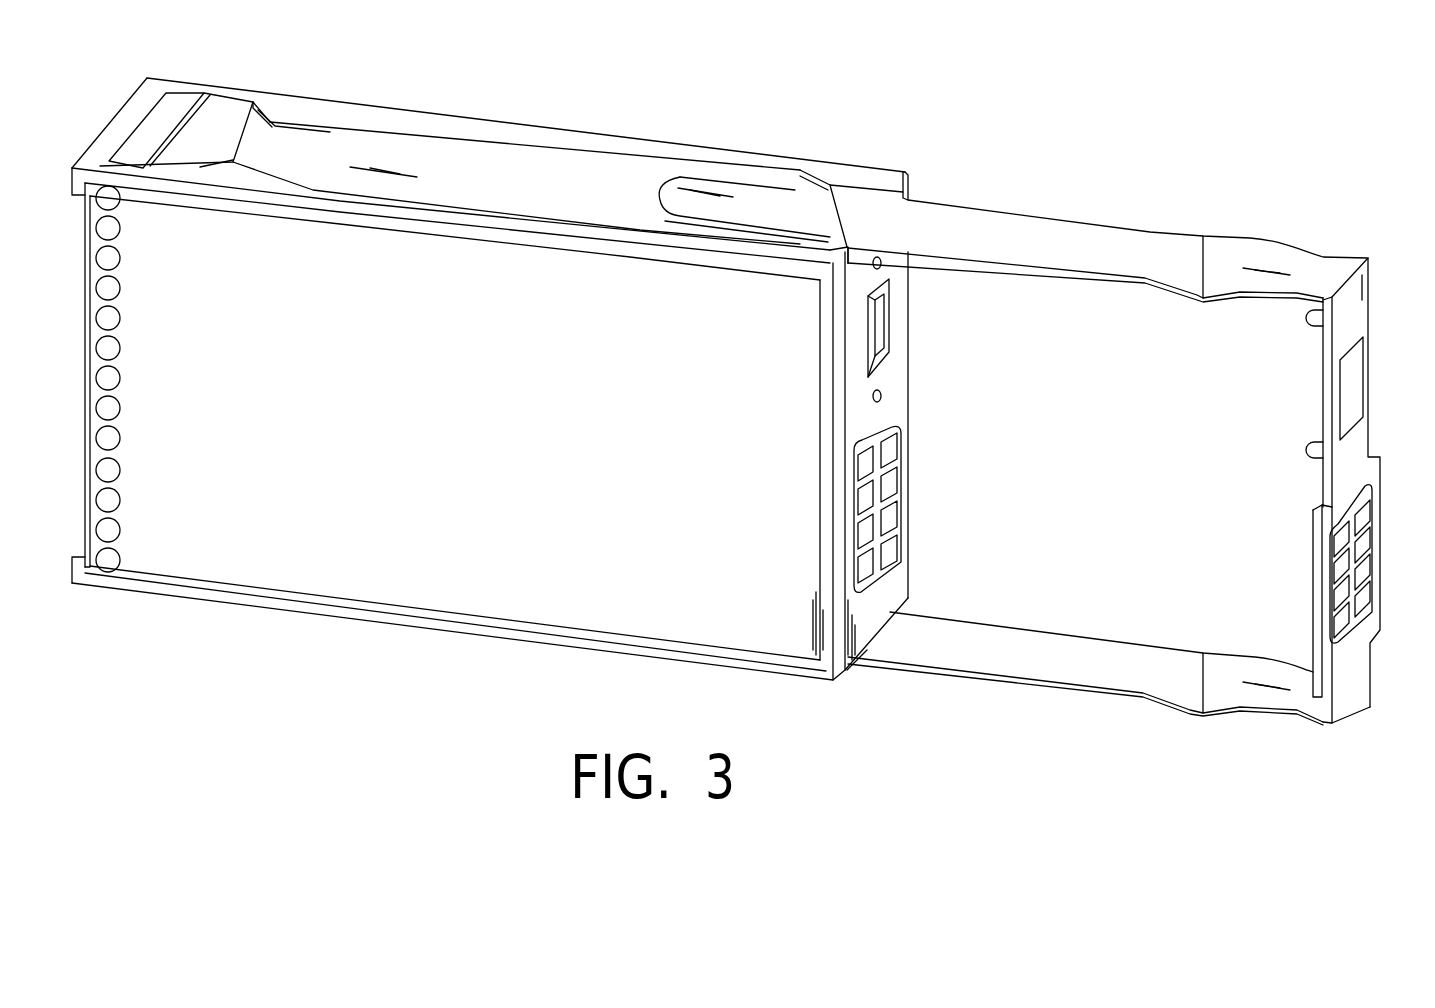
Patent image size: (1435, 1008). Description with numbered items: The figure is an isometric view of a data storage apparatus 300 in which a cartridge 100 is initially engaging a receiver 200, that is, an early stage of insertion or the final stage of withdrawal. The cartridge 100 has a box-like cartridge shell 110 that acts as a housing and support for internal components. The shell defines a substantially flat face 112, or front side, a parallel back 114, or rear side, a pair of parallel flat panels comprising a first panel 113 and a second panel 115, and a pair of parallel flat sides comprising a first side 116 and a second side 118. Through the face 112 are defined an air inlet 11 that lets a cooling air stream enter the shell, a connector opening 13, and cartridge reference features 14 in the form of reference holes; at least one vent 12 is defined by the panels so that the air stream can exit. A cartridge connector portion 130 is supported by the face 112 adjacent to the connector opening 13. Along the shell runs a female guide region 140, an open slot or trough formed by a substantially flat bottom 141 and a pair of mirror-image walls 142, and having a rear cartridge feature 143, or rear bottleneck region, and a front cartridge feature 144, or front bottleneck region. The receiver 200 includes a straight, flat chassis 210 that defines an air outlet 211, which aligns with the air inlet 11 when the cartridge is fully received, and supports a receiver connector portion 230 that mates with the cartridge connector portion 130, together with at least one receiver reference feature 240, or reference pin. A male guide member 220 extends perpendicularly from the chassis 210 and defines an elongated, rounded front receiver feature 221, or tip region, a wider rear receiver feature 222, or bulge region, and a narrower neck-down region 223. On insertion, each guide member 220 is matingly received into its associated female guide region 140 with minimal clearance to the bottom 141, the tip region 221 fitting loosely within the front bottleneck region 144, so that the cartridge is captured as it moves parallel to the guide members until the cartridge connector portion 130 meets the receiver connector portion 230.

The cartridge 100 is at (618, 97).
The cartridge shell 110 is at (497, 648).
The face 112 is at (900, 368).
The first panel 113 is at (172, 572).
The back 114 is at (83, 215).
The second panel 115 is at (862, 170).
The first side 116 is at (285, 105).
The second side 118 is at (385, 625).
The air inlet 11 is at (888, 520).
The vent 12 is at (115, 290).
The connector opening 13 is at (885, 342).
The cartridge reference feature 14 is at (882, 265).
The cartridge connector portion 130 is at (870, 318).
The female guide region 140 is at (483, 157).
The bottom 141 is at (652, 173).
The walls 142 is at (570, 147).
The rear cartridge feature 143 is at (235, 160).
The front cartridge feature 144 is at (787, 240).
The receiver 200 is at (1311, 210).
The chassis 210 is at (1313, 537).
The air outlet 211 is at (1357, 572).
The guide member 220 is at (996, 220).
The front receiver feature 221 is at (818, 238).
The rear receiver feature 222 is at (1202, 298).
The neck-down region 223 is at (1305, 290).
The receiver connector portion 230 is at (1313, 388).
The receiver reference feature 240 is at (1310, 318).
The data storage apparatus 300 is at (1110, 77).